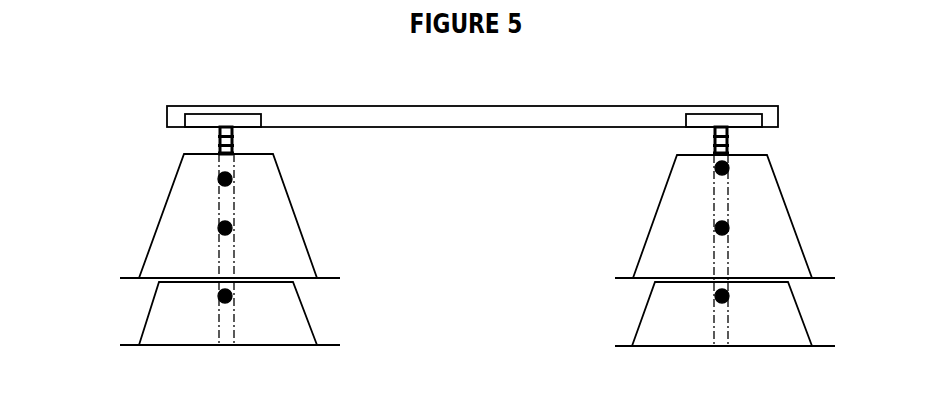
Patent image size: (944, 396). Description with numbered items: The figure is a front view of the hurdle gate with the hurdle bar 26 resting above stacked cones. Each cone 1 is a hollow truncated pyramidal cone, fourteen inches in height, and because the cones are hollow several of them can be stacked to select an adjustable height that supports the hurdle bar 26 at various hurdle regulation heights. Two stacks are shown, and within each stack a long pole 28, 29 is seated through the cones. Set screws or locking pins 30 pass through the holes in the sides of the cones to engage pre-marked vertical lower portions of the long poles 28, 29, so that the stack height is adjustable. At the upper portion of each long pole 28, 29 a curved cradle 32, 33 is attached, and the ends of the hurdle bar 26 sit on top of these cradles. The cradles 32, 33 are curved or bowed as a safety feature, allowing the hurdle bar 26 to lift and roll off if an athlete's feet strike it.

The cone 1 is at (307, 250).
The hurdle bar 26 is at (355, 112).
The long pole 28 is at (729, 138).
The long pole 29 is at (218, 138).
The locking pin 30 is at (219, 181).
The curved cradle 32 is at (747, 128).
The curved cradle 33 is at (218, 128).